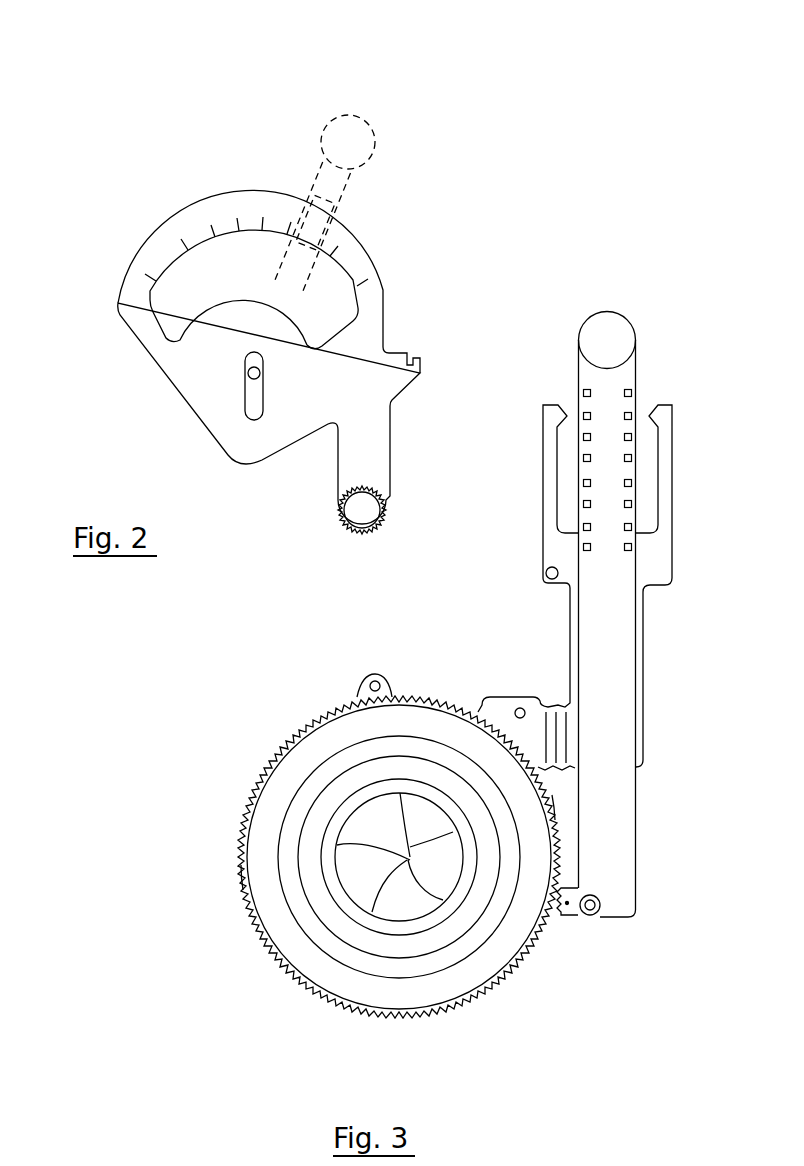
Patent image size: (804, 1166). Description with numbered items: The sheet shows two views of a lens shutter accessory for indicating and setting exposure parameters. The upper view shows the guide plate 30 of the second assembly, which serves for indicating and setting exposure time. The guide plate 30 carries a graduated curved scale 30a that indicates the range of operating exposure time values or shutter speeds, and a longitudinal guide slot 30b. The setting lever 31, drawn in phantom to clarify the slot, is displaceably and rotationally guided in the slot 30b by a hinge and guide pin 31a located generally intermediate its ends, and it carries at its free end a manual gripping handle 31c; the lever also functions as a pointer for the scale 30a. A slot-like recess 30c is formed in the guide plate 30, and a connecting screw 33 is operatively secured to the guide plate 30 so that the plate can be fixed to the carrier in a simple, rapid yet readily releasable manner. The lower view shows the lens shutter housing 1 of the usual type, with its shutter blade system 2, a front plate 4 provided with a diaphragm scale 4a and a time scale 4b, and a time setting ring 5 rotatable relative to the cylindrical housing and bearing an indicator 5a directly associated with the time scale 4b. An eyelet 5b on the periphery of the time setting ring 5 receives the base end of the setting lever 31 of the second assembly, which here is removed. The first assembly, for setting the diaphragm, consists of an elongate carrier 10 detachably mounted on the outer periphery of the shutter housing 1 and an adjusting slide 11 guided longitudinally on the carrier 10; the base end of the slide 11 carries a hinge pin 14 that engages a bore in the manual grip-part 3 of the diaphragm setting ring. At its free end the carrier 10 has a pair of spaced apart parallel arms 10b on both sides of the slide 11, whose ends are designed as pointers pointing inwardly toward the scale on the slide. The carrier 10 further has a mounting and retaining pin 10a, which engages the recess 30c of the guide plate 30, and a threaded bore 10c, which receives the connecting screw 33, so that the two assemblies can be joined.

In FIG. 2, the guide plate 30 is at (140, 336).
In FIG. 2, the graduated curved scale 30a is at (186, 222).
In FIG. 2, the guide slot 30b is at (262, 398).
In FIG. 2, the slot-like recess 30c is at (422, 357).
In FIG. 2, the setting lever 31 is at (306, 173).
In FIG. 2, the hinge and guide pin 31a is at (256, 374).
In FIG. 2, the manual gripping handle 31c is at (362, 135).
In FIG. 2, the connecting screw 33 is at (355, 510).
In FIG. 3, the shutter housing 1 is at (318, 933).
In FIG. 3, the shutter blade system 2 is at (364, 827).
In FIG. 3, the manual grip-part 3 is at (567, 910).
In FIG. 3, the front plate 4 is at (323, 740).
In FIG. 3, the diaphragm scale 4a is at (552, 805).
In FIG. 3, the time scale 4b is at (265, 822).
In FIG. 3, the time setting ring 5 is at (232, 846).
In FIG. 3, the indicator 5a is at (237, 880).
In FIG. 3, the eyelet 5b is at (358, 691).
In FIG. 3, the carrier 10 is at (637, 634).
In FIG. 3, the mounting and retaining pin 10a is at (547, 582).
In FIG. 3, the parallel arms 10b is at (553, 488).
In FIG. 3, the threaded bore 10c is at (518, 708).
In FIG. 3, the adjusting slide 11 is at (612, 808).
In FIG. 3, the hinge pin 14 is at (596, 912).